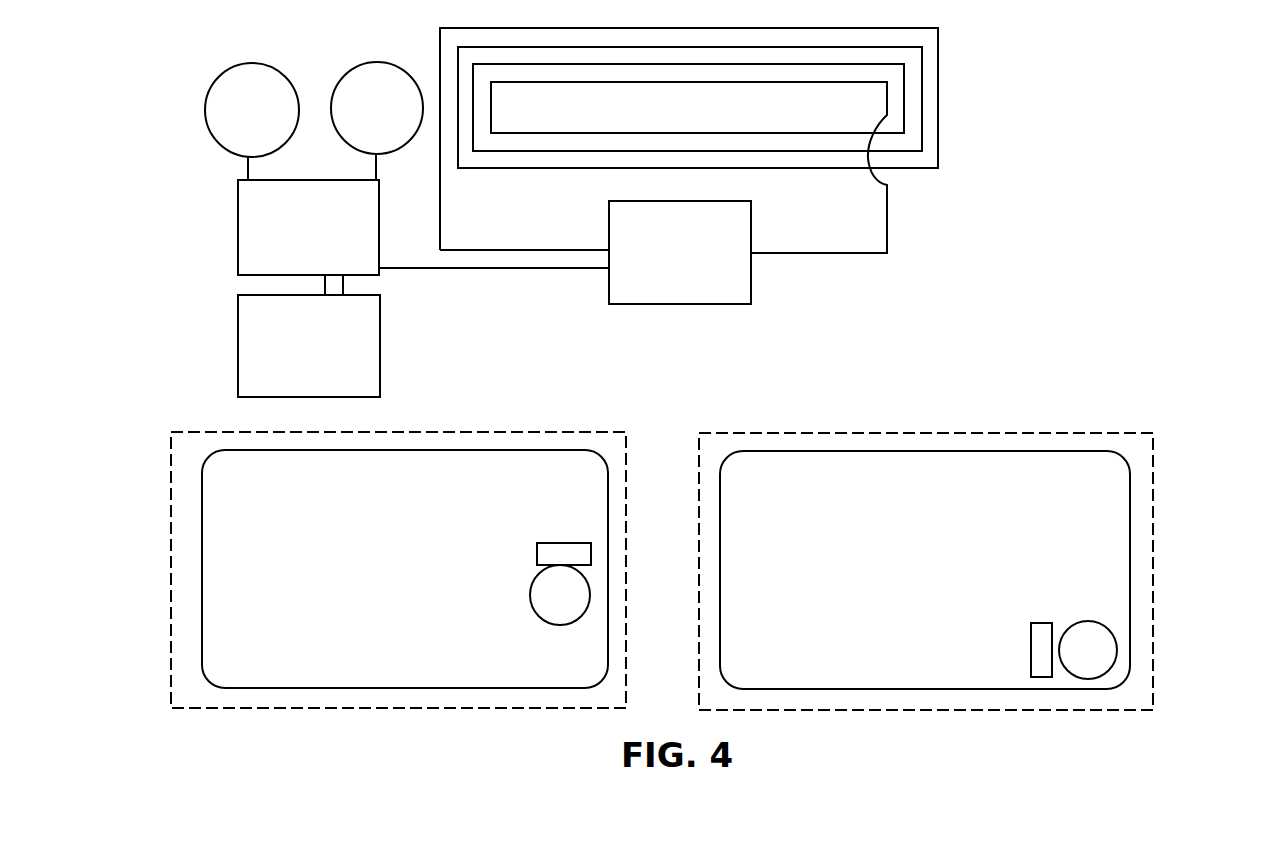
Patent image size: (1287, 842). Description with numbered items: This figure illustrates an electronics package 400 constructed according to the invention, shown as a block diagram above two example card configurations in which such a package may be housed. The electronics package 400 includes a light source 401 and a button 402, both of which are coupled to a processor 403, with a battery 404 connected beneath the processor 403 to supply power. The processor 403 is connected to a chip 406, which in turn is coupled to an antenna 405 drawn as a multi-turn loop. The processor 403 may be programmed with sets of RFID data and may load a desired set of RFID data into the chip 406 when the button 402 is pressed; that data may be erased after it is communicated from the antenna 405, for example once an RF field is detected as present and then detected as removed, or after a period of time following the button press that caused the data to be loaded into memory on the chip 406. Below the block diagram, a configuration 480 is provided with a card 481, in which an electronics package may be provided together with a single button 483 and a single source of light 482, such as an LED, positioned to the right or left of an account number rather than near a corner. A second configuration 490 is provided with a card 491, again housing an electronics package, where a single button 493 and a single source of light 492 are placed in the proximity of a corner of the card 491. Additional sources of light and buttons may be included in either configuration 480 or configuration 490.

The electronics package 400 is at (1233, 240).
The light source 401 is at (209, 127).
The button 402 is at (350, 140).
The processor 403 is at (238, 220).
The battery 404 is at (242, 342).
The antenna 405 is at (442, 30).
The chip 406 is at (612, 302).
The configuration 480 is at (171, 437).
The card 481 is at (202, 670).
The source of light 482 is at (537, 545).
The button 483 is at (540, 612).
The configuration 490 is at (700, 479).
The card 491 is at (720, 620).
The source of light 492 is at (1031, 652).
The button 493 is at (1085, 675).